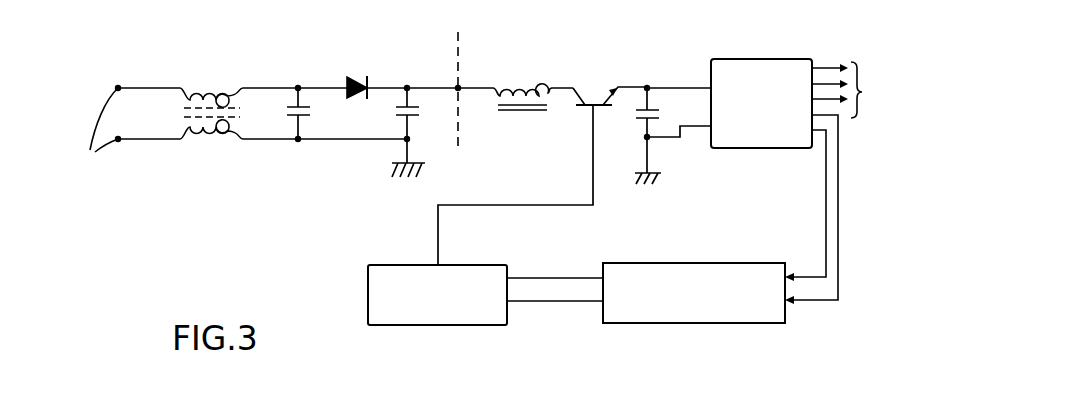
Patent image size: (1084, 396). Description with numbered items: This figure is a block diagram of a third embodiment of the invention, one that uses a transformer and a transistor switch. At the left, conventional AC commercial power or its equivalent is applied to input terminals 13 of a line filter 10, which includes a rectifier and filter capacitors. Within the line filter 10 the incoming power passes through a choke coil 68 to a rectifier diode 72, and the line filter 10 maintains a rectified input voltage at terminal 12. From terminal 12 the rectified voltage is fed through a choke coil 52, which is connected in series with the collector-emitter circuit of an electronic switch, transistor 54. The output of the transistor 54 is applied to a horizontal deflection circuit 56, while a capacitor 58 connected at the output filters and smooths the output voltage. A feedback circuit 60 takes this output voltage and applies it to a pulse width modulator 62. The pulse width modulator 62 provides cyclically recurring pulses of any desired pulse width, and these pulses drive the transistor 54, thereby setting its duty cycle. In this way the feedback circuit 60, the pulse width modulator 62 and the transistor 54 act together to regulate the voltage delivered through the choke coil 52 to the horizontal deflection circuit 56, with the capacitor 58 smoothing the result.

The line filter 10 is at (217, 221).
The terminal 12 is at (460, 86).
The input terminals 13 is at (94, 135).
The choke coil 52 is at (514, 86).
The transistor 54 is at (595, 100).
The horizontal deflection circuit 56 is at (760, 59).
The capacitor 58 is at (636, 113).
The feedback circuit 60 is at (688, 324).
The pulse width modulator 62 is at (460, 326).
The choke coil 68 is at (208, 90).
The rectifier diode 72 is at (351, 78).